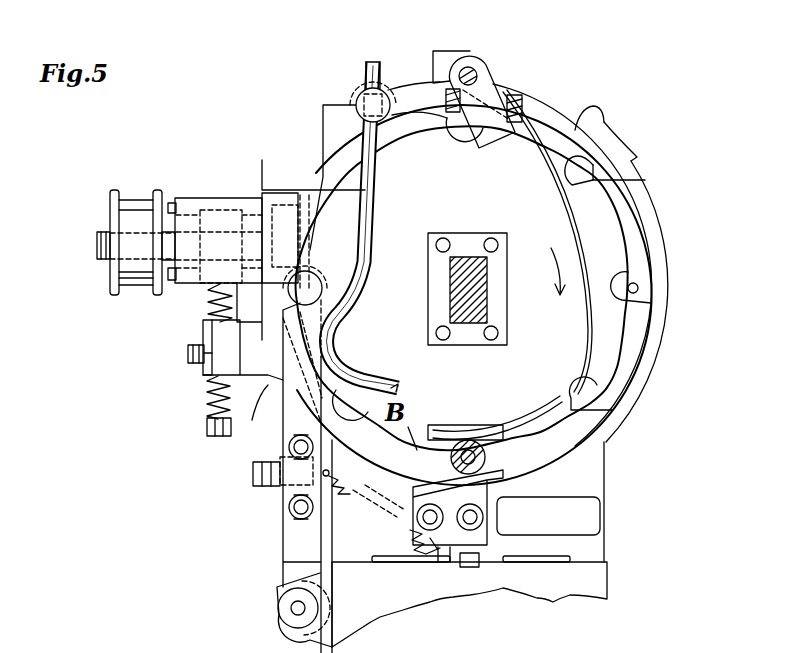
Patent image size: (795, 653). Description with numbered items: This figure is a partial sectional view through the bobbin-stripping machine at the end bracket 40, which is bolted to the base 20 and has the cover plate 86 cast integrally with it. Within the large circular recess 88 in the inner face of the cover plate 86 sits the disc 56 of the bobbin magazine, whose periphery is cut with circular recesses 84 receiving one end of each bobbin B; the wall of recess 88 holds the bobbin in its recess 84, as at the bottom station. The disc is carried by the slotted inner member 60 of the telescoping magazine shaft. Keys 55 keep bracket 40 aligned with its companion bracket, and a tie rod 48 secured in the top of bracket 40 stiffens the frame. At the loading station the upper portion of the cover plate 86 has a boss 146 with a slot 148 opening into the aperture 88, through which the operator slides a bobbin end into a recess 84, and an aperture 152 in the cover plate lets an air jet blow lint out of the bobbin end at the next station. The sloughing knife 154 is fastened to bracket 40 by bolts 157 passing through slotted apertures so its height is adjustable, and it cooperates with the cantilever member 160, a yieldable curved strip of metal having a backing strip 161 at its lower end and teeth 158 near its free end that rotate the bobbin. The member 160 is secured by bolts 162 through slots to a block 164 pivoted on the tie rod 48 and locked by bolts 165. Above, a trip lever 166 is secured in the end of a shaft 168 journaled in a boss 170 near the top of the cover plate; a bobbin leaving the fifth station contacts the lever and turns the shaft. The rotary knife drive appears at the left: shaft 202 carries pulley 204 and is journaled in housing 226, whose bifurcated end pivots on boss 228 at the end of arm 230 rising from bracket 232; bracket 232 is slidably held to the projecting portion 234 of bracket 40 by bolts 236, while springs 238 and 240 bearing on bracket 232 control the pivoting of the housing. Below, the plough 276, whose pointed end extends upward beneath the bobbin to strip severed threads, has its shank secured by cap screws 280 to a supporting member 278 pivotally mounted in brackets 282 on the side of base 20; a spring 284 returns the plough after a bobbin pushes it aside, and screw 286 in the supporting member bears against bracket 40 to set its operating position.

The base 20 is at (600, 582).
The bracket 40 is at (593, 518).
The tie rod 48 is at (472, 70).
The keys 55 is at (470, 567).
The disc 56 is at (607, 233).
The slotted inner member 60 is at (463, 257).
The recess 84 is at (612, 165).
The cover plate 86 is at (670, 282).
The circular recess 88 is at (648, 343).
The boss 146 is at (617, 170).
The slot 148 is at (604, 134).
The aperture 152 is at (638, 285).
The sloughing knife 154 is at (445, 560).
The bolts 157 is at (440, 515).
The teeth 158 is at (530, 412).
The cantilever member 160 is at (577, 343).
The backing strip 161 is at (457, 414).
The bolts 162 is at (505, 95).
The block 164 is at (498, 86).
The bolts 165 is at (437, 82).
The trip lever 166 is at (371, 183).
The shaft 168 is at (358, 100).
The boss 170 is at (363, 82).
The shaft 202 is at (127, 230).
The pulley 204 is at (132, 207).
The housing 226 is at (180, 200).
The boss 228 is at (217, 232).
The arm 230 is at (205, 308).
The bracket 232 is at (205, 372).
The projecting portion 234 is at (270, 387).
The bolts 236 is at (188, 353).
The spring 238 is at (200, 320).
The spring 240 is at (207, 408).
The plough 276 is at (287, 535).
The supporting member 278 is at (290, 578).
The cap screws 280 is at (297, 457).
The brackets 282 is at (307, 630).
The spring 284 is at (352, 496).
The screw 286 is at (256, 478).